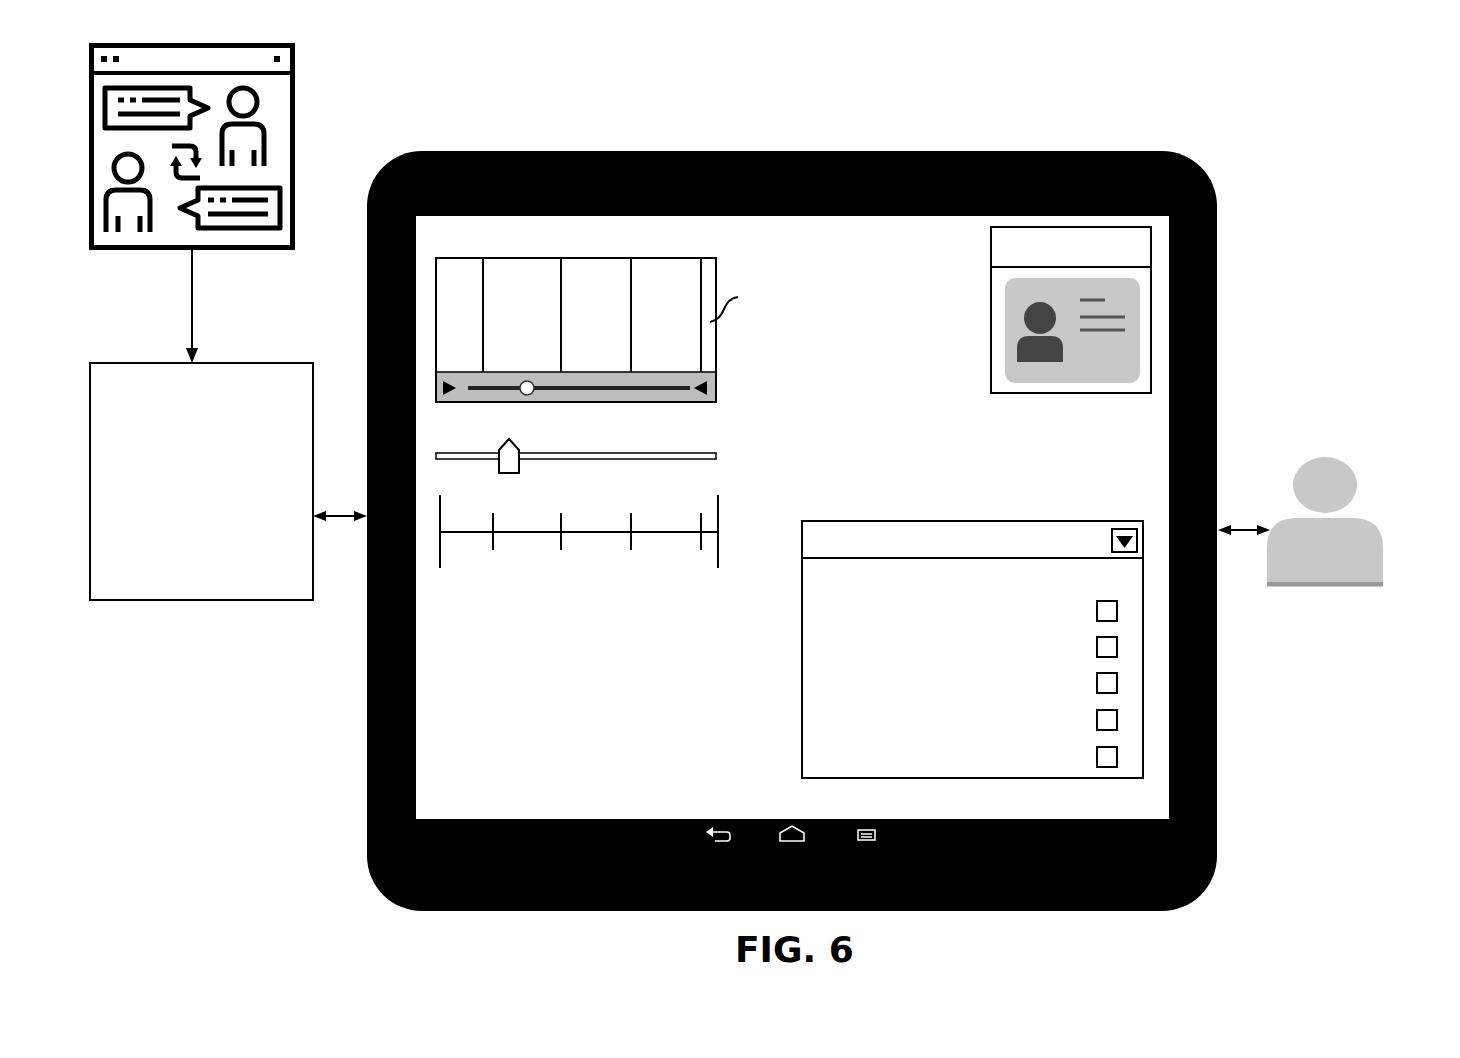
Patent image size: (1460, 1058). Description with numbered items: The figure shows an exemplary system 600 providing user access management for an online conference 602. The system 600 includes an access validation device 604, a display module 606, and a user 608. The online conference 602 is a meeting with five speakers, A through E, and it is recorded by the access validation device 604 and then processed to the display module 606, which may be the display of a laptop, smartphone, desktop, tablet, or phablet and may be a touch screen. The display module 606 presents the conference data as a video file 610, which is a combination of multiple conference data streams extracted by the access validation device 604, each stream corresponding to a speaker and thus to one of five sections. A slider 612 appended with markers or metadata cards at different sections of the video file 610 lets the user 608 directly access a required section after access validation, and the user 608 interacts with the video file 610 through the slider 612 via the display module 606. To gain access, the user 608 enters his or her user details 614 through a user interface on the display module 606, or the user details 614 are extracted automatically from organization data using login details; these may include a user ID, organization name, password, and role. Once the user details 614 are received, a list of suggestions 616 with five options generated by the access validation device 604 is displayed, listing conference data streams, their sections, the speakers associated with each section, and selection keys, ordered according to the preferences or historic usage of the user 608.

The system 600 is at (1282, 166).
The online conference 602 is at (296, 150).
The access validation device 604 is at (194, 601).
The display module 606 is at (862, 152).
The user 608 is at (1360, 490).
The video file 610 is at (720, 390).
The slider 612 is at (714, 456).
The user details 614 is at (990, 262).
The list of suggestions 616 is at (888, 521).